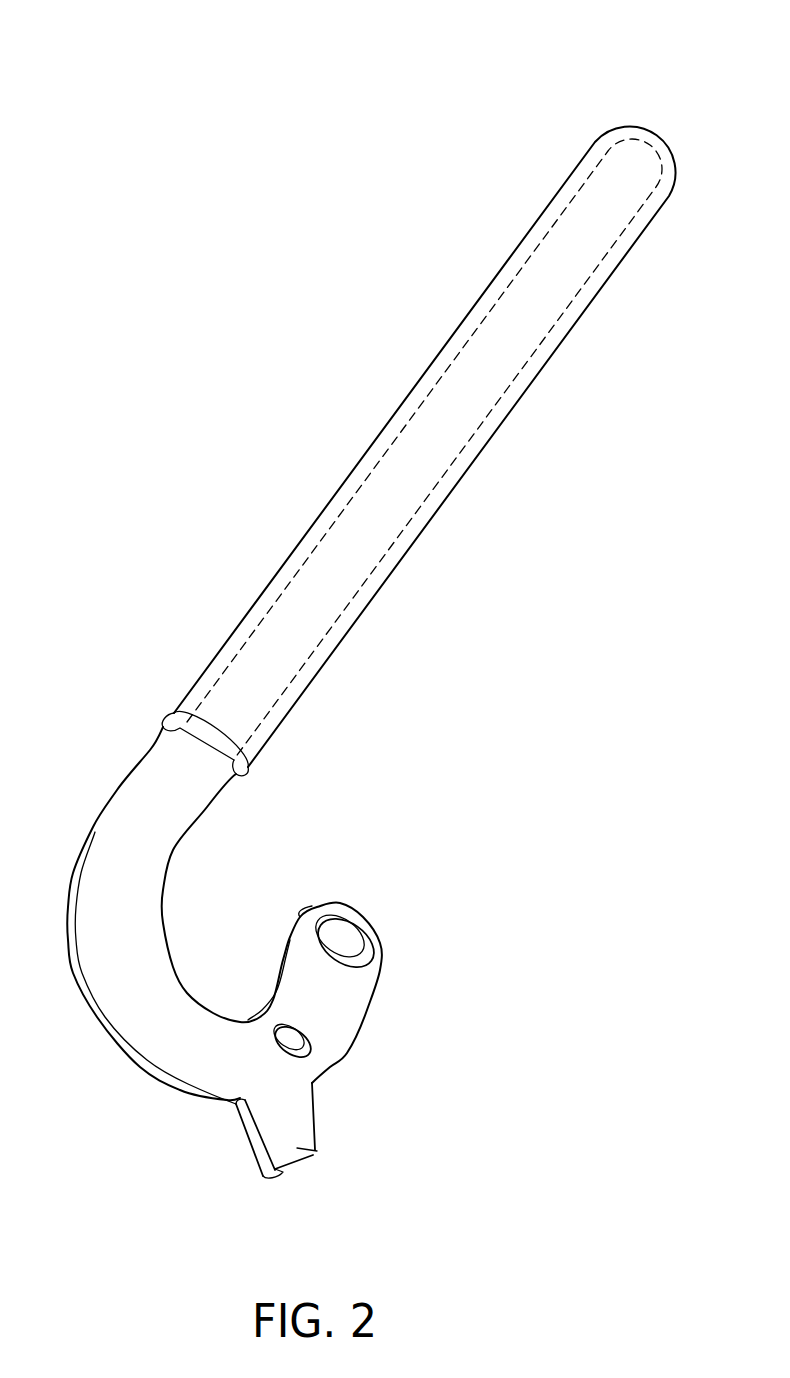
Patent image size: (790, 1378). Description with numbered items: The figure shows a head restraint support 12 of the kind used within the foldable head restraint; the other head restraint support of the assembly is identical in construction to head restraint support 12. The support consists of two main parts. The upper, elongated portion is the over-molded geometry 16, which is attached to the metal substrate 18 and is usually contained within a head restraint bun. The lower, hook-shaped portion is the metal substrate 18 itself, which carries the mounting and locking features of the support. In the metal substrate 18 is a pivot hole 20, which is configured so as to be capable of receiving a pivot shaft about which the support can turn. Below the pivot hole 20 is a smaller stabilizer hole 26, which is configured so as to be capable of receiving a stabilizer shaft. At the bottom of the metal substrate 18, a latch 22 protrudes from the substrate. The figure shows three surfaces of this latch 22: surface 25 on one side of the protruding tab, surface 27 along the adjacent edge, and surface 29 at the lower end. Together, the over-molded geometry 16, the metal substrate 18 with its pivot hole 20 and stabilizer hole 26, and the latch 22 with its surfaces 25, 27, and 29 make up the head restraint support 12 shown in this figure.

The head restraint support 12 is at (634, 110).
The over-molded geometry 16 is at (534, 222).
The metal substrate 18 is at (221, 1016).
The pivot hole 20 is at (359, 933).
The latch 22 is at (312, 1154).
The surface 25 is at (253, 1150).
The stabilizer hole 26 is at (310, 1044).
The surface 27 is at (316, 1127).
The surface 29 is at (291, 1180).